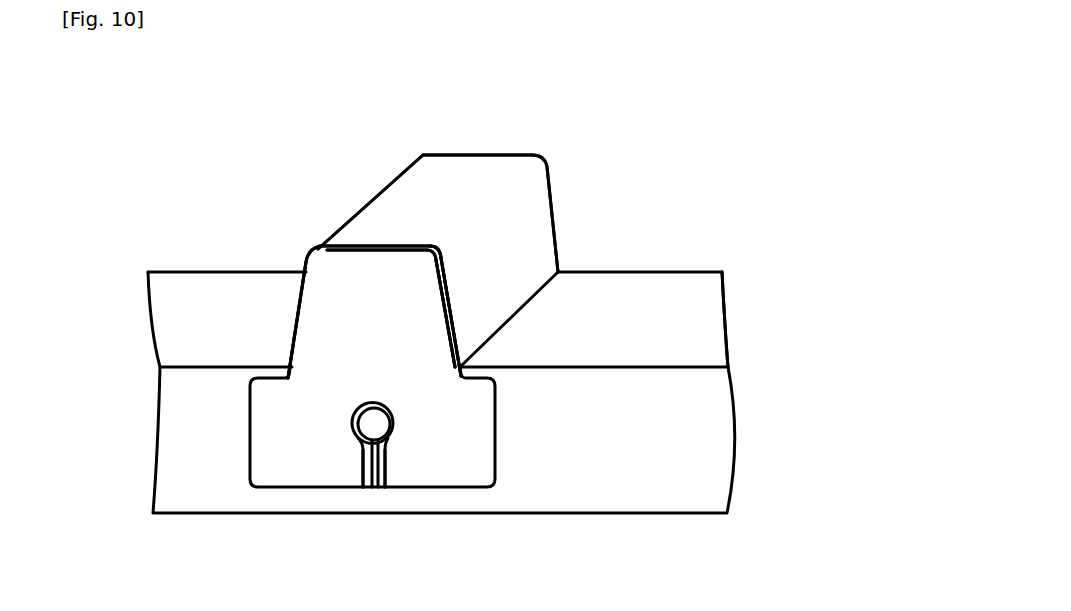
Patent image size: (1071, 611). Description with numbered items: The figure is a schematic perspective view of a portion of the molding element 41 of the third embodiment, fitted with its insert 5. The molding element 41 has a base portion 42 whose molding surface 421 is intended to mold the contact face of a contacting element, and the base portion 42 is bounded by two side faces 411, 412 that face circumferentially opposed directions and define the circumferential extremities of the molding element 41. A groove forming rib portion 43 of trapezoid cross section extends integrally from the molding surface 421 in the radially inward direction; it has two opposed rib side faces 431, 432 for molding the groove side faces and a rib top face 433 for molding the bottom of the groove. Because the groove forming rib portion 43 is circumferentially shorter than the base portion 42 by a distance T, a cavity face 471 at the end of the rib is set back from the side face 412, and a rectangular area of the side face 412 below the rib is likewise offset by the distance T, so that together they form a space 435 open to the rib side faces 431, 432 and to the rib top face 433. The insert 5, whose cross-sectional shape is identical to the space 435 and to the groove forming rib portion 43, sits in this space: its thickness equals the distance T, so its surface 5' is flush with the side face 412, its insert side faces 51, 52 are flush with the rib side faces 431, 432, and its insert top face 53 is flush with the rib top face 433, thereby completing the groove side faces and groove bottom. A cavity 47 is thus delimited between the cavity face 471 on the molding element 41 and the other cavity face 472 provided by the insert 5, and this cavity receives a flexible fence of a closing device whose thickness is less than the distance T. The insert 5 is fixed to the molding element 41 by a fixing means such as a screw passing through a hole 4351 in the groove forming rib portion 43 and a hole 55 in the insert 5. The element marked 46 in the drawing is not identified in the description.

The insert 5 is at (260, 318).
The surface of the insert 5' is at (374, 312).
The molding element 41 is at (612, 143).
The base portion 42 is at (648, 272).
The groove forming rib portion 43 is at (352, 237).
The inner contact surface 46 is at (335, 260).
The cavity 47 is at (430, 245).
The insert side face 51 is at (293, 283).
The insert side face 52 is at (460, 312).
The insert top face 53 is at (338, 256).
The hole in the insert 55 is at (397, 422).
The side face of the base portion 411 is at (717, 275).
The side face of the base portion 412 is at (442, 427).
The molding surface 421 is at (444, 332).
The rib side face 431 is at (397, 162).
The rib side face 432 is at (543, 253).
The rib top face 433 is at (468, 175).
The space 435 is at (375, 490).
The cavity face 471 is at (452, 262).
The cavity face 472 is at (442, 313).
The hole in the groove forming rib portion 4351 is at (347, 438).